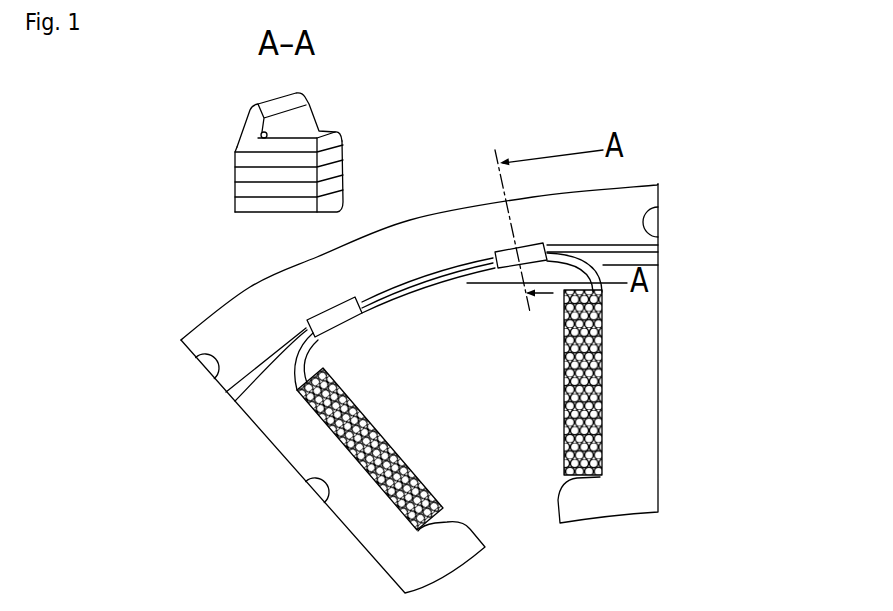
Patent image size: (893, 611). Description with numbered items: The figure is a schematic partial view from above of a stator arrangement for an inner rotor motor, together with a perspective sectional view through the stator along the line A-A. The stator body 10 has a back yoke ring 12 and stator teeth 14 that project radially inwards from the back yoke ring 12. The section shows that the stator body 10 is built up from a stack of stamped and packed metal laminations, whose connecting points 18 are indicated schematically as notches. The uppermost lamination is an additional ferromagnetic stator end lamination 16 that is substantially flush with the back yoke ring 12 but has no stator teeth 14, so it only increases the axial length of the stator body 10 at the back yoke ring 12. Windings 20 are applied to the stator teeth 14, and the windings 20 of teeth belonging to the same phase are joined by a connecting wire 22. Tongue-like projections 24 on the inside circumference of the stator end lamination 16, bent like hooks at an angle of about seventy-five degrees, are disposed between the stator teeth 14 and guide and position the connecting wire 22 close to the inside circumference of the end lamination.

The stator body 10 is at (270, 470).
The back yoke ring 12 is at (190, 318).
The stator teeth 14 is at (630, 432).
The stator end lamination 16 is at (267, 300).
The connecting points 18 is at (208, 366).
The windings 20 is at (310, 407).
The connecting wire 22 is at (292, 125).
The tongue-like projections 24 is at (303, 100).